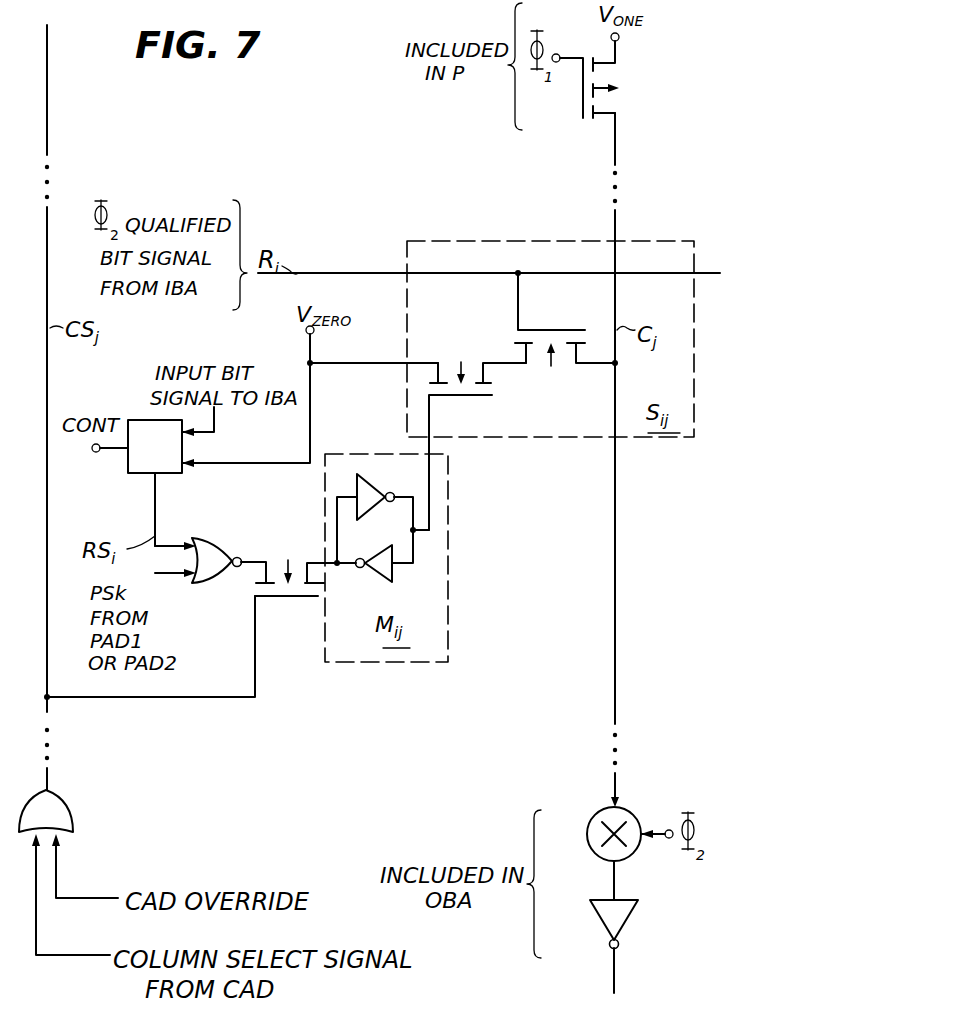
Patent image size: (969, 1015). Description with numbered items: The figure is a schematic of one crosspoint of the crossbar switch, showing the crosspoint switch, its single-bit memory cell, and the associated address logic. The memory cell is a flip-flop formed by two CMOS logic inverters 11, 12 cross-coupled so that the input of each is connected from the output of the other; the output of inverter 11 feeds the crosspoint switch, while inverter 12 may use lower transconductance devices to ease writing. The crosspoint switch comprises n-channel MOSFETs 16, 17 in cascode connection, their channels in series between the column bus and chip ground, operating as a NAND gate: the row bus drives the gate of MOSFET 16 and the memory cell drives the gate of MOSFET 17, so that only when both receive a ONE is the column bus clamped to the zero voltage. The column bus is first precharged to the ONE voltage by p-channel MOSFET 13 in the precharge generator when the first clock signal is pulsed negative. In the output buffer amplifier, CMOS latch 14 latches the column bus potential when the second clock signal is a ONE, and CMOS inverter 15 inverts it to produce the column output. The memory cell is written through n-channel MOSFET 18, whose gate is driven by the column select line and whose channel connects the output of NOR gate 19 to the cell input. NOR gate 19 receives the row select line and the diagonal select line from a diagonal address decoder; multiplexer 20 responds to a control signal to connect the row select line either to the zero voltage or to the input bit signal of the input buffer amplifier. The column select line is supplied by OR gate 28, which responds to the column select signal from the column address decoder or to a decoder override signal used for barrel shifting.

The CMOS logic inverter 11 is at (374, 490).
The CMOS logic inverter 12 is at (378, 581).
The p-channel MOSFET 13 is at (604, 78).
The CMOS latch 14 is at (588, 824).
The CMOS inverter 15 is at (594, 918).
The n-channel MOSFET 16 is at (540, 373).
The n-channel MOSFET 17 is at (469, 374).
The n-channel MOSFET 18 is at (297, 565).
The NOR gate 19 is at (212, 540).
The multiplexer 20 is at (138, 420).
The OR gate 28 is at (68, 812).